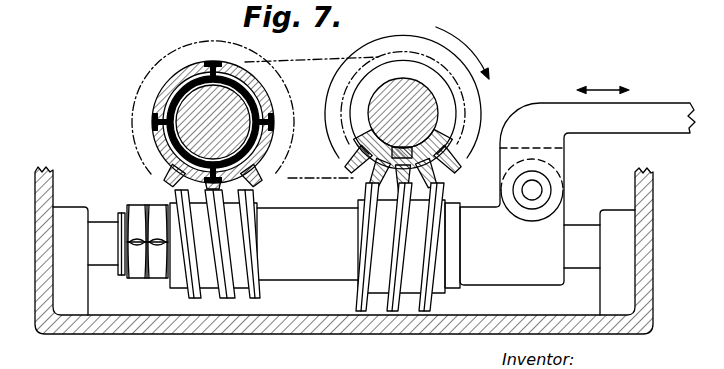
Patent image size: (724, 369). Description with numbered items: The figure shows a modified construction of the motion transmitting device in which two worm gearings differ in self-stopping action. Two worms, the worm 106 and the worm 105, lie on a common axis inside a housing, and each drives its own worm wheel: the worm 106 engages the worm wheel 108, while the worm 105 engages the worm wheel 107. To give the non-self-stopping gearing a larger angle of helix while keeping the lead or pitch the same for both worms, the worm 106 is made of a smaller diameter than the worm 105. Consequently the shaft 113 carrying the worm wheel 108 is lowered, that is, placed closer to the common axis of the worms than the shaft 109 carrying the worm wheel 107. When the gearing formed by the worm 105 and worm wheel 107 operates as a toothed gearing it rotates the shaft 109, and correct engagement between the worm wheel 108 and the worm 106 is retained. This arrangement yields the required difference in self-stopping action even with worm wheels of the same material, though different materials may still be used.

The worm 105 is at (420, 302).
The worm 106 is at (200, 300).
The worm wheel 107 is at (450, 166).
The worm wheel 108 is at (165, 181).
The shaft 109 is at (434, 107).
The shaft 113 is at (193, 112).